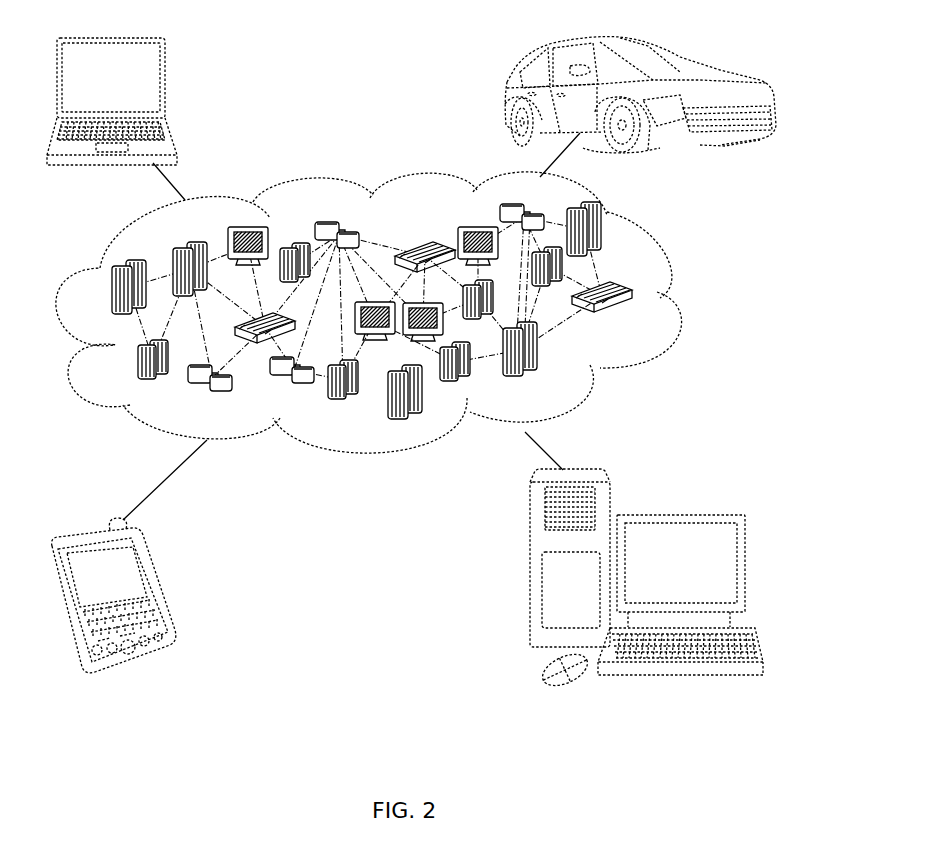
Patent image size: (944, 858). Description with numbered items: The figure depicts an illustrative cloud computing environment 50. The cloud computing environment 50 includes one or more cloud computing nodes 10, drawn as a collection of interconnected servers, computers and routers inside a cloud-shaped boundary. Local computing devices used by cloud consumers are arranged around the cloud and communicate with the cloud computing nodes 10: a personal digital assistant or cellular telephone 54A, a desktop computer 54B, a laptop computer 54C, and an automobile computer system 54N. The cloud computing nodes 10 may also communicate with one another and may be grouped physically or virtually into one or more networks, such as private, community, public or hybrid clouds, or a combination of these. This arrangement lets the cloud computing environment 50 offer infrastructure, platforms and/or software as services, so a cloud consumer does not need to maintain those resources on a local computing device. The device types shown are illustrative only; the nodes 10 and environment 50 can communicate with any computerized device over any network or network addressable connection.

The cloud computing environment 50 is at (680, 292).
The cloud computing node 10 is at (636, 320).
The personal digital assistant or cellular telephone 54A is at (158, 584).
The desktop computer 54B is at (678, 514).
The laptop computer 54C is at (165, 88).
The automobile computer system 54N is at (508, 100).